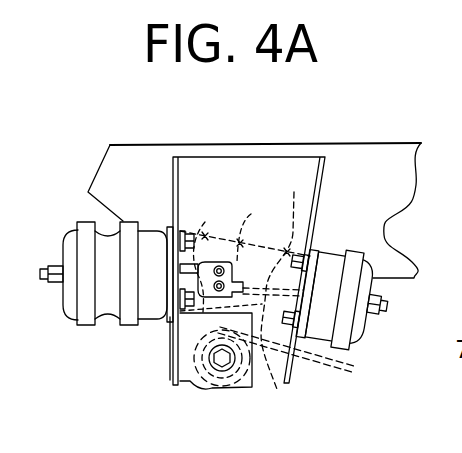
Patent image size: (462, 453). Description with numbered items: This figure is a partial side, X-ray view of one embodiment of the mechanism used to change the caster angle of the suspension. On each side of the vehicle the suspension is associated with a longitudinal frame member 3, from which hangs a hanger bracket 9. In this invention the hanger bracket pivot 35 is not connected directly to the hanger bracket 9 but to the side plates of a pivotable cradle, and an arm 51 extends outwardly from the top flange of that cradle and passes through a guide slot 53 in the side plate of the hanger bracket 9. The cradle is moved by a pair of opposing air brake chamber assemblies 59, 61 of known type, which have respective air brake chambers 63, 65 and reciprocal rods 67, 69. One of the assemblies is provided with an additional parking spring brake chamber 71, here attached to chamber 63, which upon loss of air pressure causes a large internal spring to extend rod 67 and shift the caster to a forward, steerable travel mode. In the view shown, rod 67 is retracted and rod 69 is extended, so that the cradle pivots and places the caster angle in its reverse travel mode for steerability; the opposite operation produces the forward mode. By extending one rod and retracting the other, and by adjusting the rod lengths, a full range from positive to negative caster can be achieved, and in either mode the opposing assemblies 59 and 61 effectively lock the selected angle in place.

The longitudinal frame member 3 is at (343, 166).
The hanger bracket 9 is at (237, 173).
The hanger bracket pivot 35 is at (170, 364).
The arm 51 is at (244, 226).
The guide slot 53 is at (262, 365).
The air brake chamber assembly 59 is at (93, 282).
The air brake chamber assembly 61 is at (360, 356).
The air brake chamber 63 is at (152, 233).
The air brake chamber 65 is at (385, 229).
The reciprocal rod 67 is at (206, 223).
The reciprocal rod 69 is at (282, 255).
The parking spring brake chamber 71 is at (66, 226).